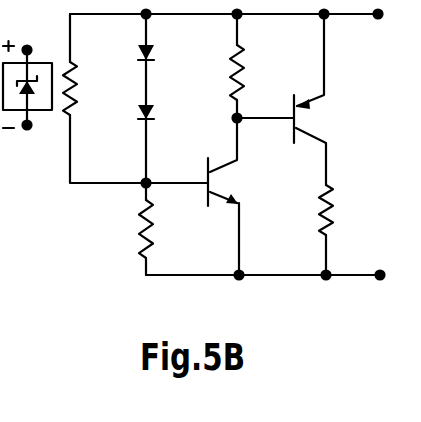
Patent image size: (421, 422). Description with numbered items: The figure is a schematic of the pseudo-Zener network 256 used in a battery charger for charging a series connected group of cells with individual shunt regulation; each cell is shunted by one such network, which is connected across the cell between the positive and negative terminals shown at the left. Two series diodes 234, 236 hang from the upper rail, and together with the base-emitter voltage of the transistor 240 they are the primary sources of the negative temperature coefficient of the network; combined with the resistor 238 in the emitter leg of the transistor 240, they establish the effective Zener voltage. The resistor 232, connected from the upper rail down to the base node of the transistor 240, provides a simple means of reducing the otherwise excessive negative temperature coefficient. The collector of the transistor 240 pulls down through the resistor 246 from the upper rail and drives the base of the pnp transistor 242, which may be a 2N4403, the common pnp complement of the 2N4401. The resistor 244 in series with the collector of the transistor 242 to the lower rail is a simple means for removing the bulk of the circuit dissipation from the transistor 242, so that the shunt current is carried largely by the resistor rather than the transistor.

The resistor 232 is at (76, 85).
The diode 234 is at (157, 52).
The diode 236 is at (155, 111).
The resistor 238 is at (152, 236).
The transistor 240 is at (219, 188).
The transistor 242 is at (328, 82).
The resistor 244 is at (325, 191).
The resistor 246 is at (240, 78).
The network 256 is at (122, 208).